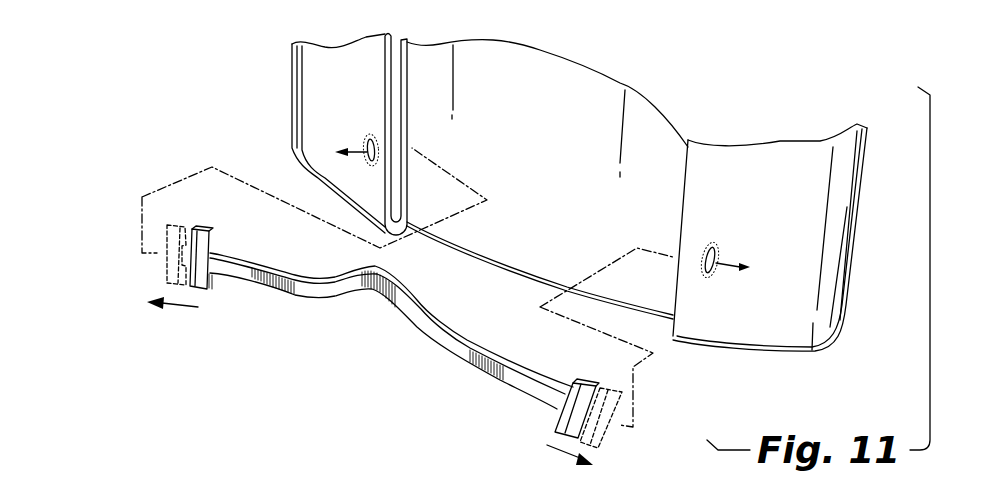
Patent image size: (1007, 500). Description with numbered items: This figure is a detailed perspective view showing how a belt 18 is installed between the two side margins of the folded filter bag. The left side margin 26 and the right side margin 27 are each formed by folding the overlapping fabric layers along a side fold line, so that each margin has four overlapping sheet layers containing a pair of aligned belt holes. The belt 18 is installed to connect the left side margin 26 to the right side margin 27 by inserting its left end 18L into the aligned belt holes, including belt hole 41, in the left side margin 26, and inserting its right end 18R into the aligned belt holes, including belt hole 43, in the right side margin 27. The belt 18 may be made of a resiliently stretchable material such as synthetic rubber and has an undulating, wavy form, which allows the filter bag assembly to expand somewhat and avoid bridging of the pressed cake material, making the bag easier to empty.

The left side margin 26 is at (306, 119).
The belt hole 41 is at (369, 142).
The right side margin 27 is at (751, 336).
The belt hole 43 is at (716, 249).
The belt 18 is at (417, 327).
The left end 18L is at (212, 284).
The right end 18R is at (550, 420).